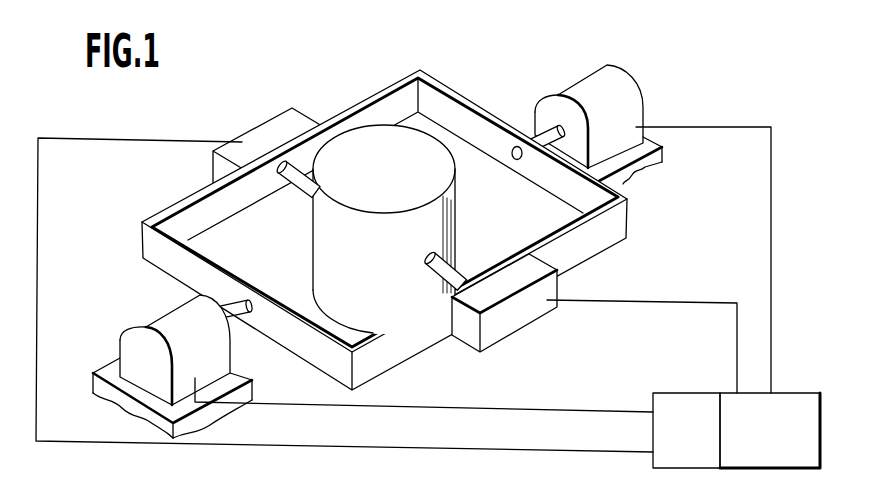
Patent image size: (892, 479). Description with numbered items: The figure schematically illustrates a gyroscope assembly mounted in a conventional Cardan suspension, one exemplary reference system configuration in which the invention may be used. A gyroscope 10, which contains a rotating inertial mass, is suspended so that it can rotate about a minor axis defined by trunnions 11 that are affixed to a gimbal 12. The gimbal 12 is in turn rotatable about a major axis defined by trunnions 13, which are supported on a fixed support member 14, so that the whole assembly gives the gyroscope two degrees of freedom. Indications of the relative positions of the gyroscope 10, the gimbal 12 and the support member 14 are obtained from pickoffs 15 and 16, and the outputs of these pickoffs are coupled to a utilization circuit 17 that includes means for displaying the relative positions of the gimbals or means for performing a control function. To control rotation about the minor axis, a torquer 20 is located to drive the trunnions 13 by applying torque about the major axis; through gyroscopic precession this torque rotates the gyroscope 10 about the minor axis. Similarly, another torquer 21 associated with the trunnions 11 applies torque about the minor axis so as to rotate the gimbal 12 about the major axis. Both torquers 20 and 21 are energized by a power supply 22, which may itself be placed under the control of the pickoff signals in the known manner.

The gyroscope 10 is at (395, 164).
The trunnions 11 is at (303, 181).
The gimbal 12 is at (420, 337).
The trunnions 13 is at (238, 306).
The fixed support member 14 is at (650, 171).
The pickoff 15 is at (533, 310).
The pickoff 16 is at (600, 82).
The utilization circuit 17 is at (800, 393).
The torquer 20 is at (153, 325).
The torquer 21 is at (263, 132).
The power supply 22 is at (690, 393).